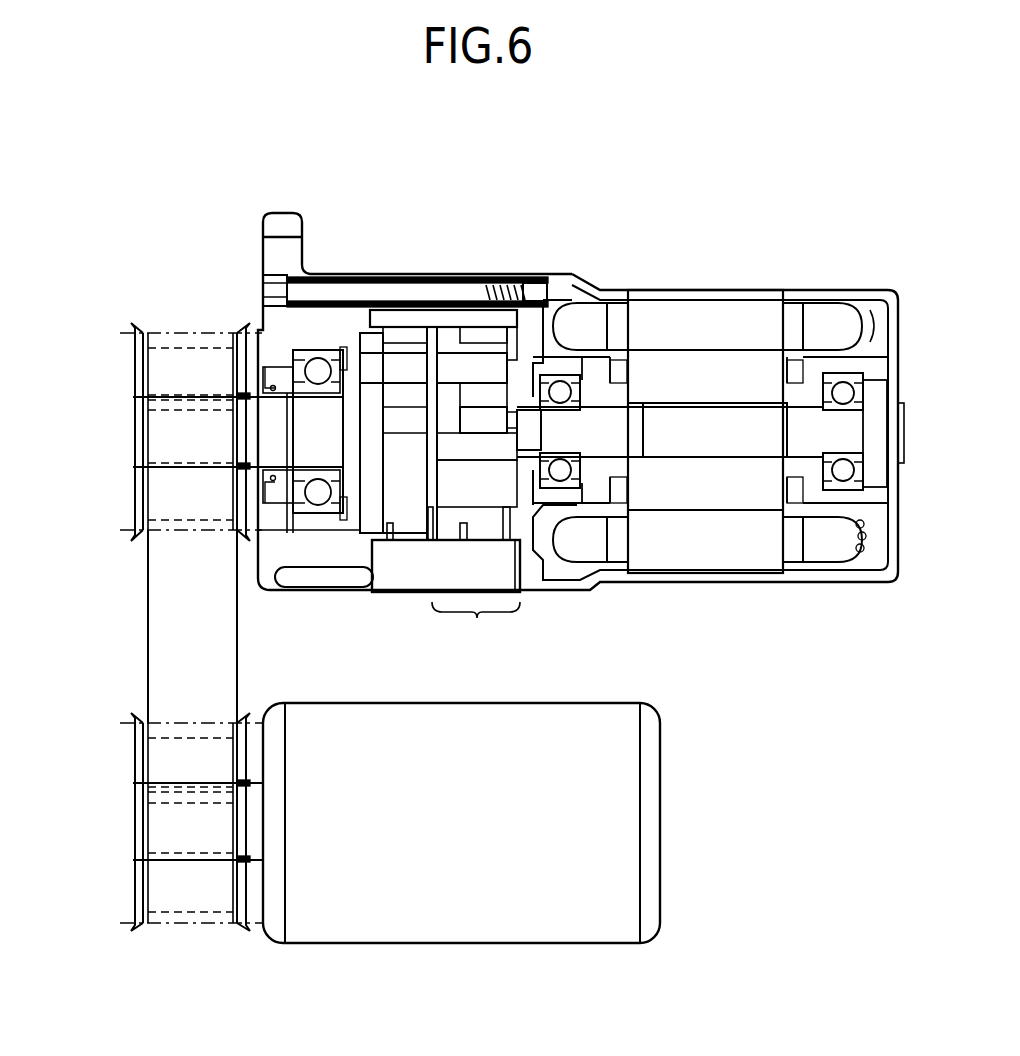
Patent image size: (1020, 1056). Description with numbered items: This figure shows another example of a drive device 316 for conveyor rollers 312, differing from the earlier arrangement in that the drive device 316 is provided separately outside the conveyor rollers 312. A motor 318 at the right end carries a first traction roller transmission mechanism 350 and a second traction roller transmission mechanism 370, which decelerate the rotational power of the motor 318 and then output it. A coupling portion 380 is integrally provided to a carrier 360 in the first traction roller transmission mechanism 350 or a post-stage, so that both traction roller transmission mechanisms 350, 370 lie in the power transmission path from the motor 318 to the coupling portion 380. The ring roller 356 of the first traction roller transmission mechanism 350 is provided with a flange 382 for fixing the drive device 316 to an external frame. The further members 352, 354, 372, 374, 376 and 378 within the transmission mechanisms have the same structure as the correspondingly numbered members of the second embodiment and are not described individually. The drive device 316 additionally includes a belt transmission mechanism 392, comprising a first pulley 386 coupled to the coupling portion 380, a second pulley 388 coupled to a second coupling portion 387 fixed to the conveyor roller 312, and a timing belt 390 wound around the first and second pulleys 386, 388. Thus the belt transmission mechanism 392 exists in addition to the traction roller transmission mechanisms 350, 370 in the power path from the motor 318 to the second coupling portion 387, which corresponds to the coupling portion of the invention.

The conveyor roller 312 is at (497, 945).
The drive device 316 is at (722, 162).
The motor 318 is at (660, 560).
The first traction roller transmission mechanism 350 is at (432, 602).
The gear plate 352 is at (420, 420).
The gear 354 is at (393, 340).
The ring roller 356 is at (415, 550).
The carrier 360 is at (371, 393).
The second traction roller transmission mechanism 370 is at (476, 627).
The output shaft 372 is at (512, 400).
The clutch member 374 is at (477, 340).
The clutch housing 376 is at (483, 550).
The clutch sleeve 378 is at (450, 327).
The coupling portion 380 is at (273, 427).
The flange 382 is at (282, 212).
The first pulley 386 is at (133, 375).
The second coupling portion 387 is at (257, 800).
The second pulley 388 is at (133, 880).
The timing belt 390 is at (160, 657).
The belt transmission mechanism 392 is at (125, 598).